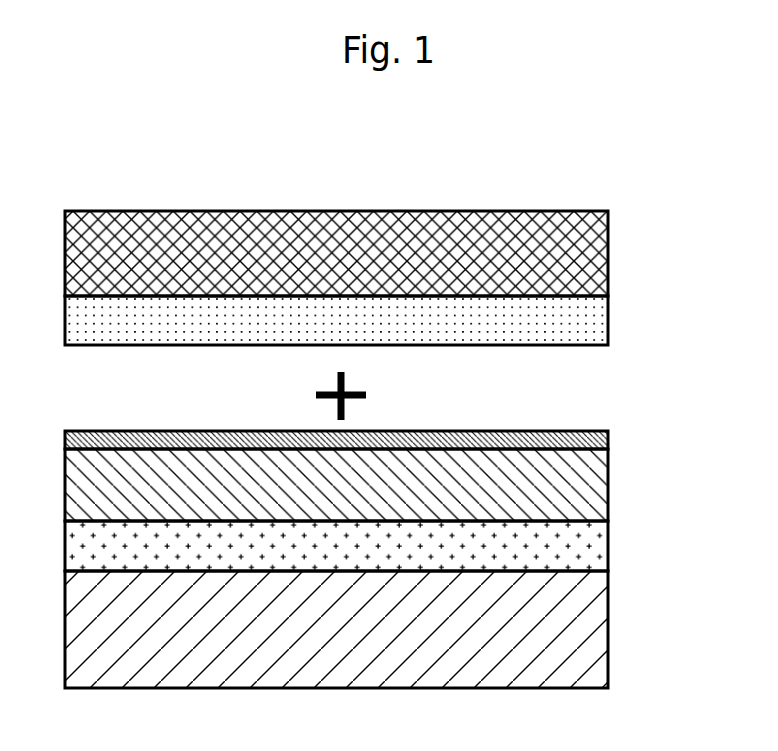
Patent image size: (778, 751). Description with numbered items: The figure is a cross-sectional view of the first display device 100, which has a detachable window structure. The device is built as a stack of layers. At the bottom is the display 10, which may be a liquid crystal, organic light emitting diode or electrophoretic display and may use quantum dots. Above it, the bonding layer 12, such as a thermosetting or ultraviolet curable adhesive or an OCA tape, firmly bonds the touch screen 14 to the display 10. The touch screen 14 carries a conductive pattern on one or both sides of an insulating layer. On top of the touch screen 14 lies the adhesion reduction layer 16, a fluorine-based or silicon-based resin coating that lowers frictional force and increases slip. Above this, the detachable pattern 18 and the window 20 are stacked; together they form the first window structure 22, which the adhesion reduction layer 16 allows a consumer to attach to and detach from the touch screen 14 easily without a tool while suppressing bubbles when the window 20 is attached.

The first display device 100 is at (90, 145).
The first window structure 22 is at (395, 278).
The window 20 is at (600, 254).
The detachable pattern 18 is at (600, 326).
The adhesion reduction layer 16 is at (600, 444).
The touch screen 14 is at (600, 484).
The bonding layer 12 is at (600, 549).
The display 10 is at (600, 629).